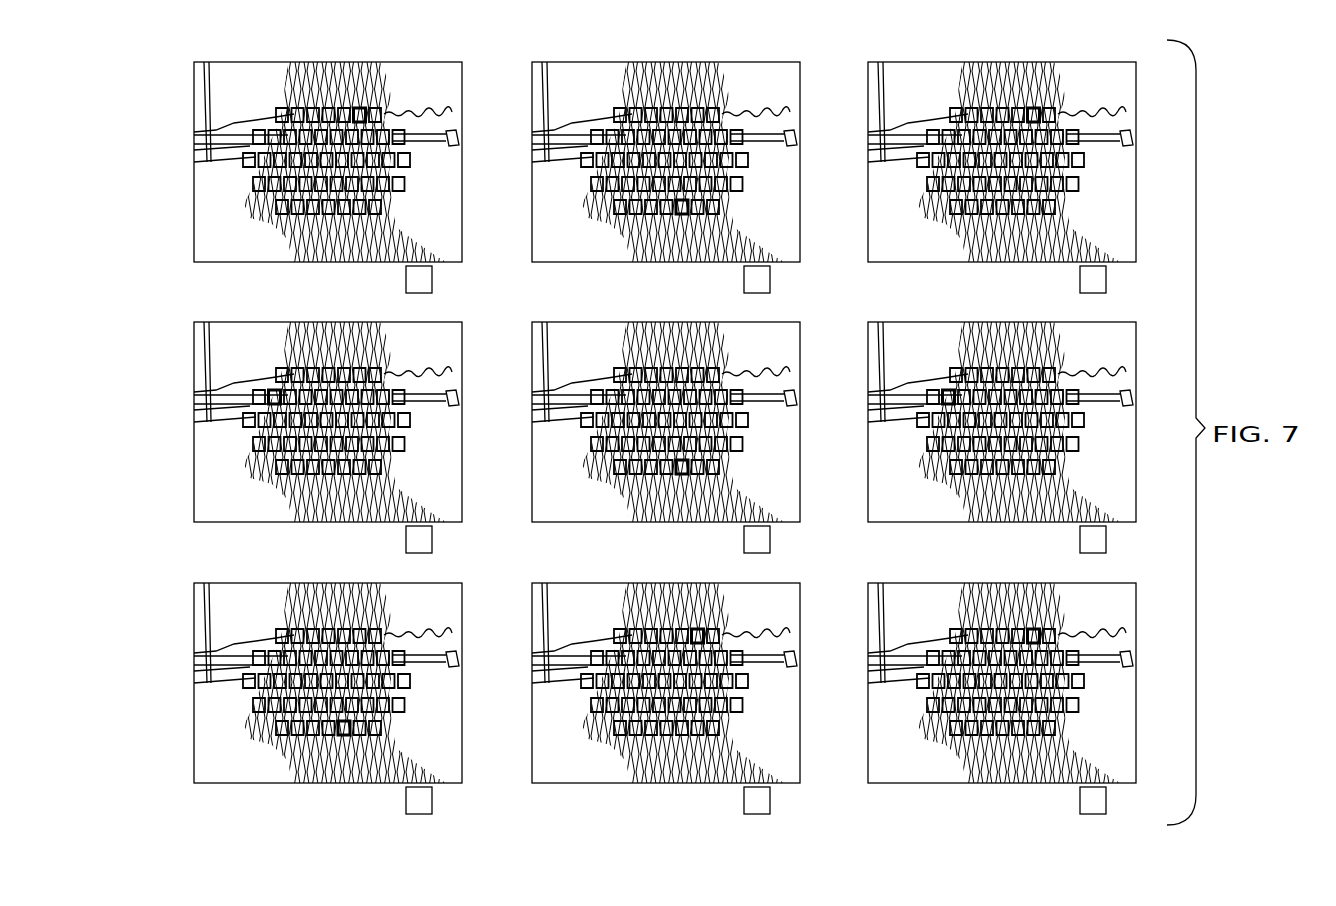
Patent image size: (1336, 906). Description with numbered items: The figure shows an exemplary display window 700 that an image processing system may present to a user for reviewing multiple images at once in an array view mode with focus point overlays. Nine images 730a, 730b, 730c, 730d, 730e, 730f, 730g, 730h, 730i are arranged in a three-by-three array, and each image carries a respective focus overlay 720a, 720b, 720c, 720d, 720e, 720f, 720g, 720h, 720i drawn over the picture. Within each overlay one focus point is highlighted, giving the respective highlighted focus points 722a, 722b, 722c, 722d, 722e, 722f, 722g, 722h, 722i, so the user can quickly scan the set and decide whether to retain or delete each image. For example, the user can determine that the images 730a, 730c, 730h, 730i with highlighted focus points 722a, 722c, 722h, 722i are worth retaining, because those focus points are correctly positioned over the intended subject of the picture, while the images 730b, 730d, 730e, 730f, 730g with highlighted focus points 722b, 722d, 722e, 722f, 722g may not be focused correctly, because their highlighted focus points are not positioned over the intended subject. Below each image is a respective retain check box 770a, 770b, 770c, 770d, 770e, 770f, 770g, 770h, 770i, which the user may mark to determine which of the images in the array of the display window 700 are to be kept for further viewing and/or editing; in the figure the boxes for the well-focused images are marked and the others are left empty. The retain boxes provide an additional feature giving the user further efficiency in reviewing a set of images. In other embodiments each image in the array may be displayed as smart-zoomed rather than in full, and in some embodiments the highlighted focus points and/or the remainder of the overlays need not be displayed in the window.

The display window 700 is at (721, 58).
The focus overlay 720a is at (384, 161).
The focus overlay 720b is at (722, 161).
The focus overlay 720c is at (1058, 161).
The focus overlay 720d is at (384, 421).
The focus overlay 720e is at (722, 421).
The focus overlay 720f is at (1059, 421).
The focus overlay 720g is at (384, 682).
The focus overlay 720h is at (722, 682).
The focus overlay 720i is at (1058, 682).
The highlighted focus point 722a is at (400, 78).
The highlighted focus point 722b is at (639, 246).
The highlighted focus point 722c is at (1074, 78).
The highlighted focus point 722d is at (247, 347).
The highlighted focus point 722e is at (639, 506).
The highlighted focus point 722f is at (920, 347).
The highlighted focus point 722g is at (301, 767).
The highlighted focus point 722h is at (737, 599).
The highlighted focus point 722i is at (1074, 599).
The image 730a is at (357, 152).
The image 730b is at (695, 152).
The image 730c is at (1030, 156).
The image 730d is at (357, 411).
The image 730e is at (695, 411).
The image 730f is at (1032, 411).
The image 730g is at (357, 672).
The image 730h is at (695, 672).
The image 730i is at (1031, 672).
The retain check box 770a is at (432, 279).
The retain check box 770b is at (770, 279).
The retain check box 770c is at (1106, 279).
The retain check box 770d is at (432, 539).
The retain check box 770e is at (770, 539).
The retain check box 770f is at (1107, 539).
The retain check box 770g is at (432, 800).
The retain check box 770h is at (770, 800).
The retain check box 770i is at (1106, 800).